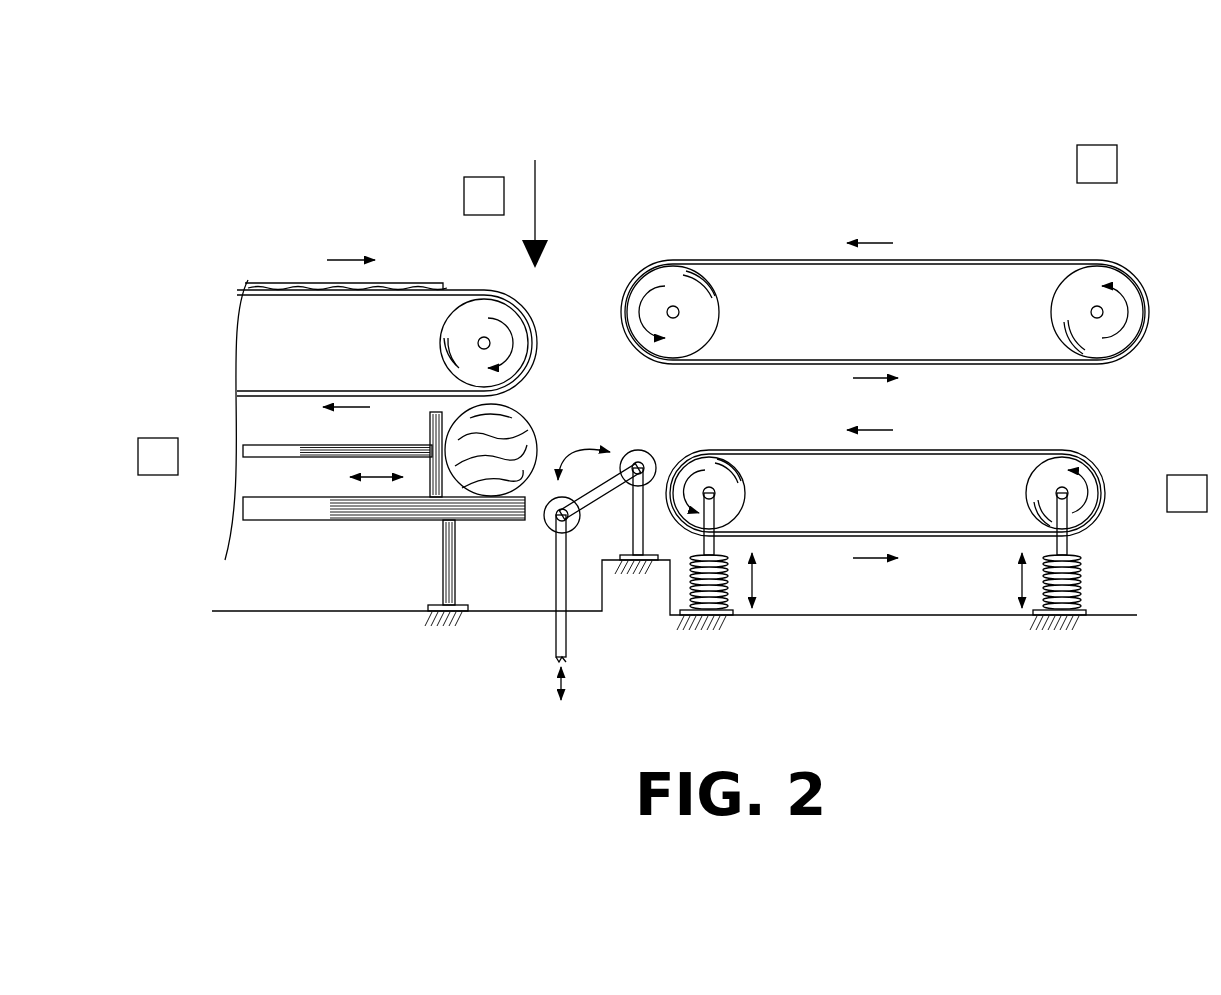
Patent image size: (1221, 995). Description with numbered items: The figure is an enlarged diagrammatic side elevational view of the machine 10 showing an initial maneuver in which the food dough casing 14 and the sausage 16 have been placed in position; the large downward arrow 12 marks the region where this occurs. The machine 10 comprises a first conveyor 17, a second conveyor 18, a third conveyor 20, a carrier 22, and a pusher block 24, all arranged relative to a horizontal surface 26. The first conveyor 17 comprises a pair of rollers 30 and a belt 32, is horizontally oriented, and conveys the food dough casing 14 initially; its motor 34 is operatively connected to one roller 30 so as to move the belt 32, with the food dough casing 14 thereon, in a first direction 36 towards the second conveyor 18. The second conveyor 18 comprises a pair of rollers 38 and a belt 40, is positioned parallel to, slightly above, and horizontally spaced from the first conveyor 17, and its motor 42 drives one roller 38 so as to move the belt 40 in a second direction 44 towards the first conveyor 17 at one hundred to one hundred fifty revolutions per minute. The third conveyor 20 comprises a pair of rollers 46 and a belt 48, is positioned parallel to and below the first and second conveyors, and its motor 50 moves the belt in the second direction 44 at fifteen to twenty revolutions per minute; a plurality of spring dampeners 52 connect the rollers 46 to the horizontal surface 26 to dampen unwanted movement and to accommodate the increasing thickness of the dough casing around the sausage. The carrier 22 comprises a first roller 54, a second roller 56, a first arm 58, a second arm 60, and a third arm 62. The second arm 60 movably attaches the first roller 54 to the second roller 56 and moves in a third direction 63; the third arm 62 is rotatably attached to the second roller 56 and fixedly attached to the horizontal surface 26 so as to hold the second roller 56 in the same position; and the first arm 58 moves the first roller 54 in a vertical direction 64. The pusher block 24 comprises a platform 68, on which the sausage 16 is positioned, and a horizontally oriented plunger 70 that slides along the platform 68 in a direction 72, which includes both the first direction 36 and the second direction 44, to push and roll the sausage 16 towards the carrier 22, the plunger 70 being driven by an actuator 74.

The machine 10 is at (597, 125).
The feed direction arrow 12 is at (535, 196).
The food dough casing 14 is at (270, 280).
The sausage 16 is at (508, 427).
The first conveyor 17 is at (462, 291).
The second conveyor 18 is at (885, 245).
The third conveyor 20 is at (936, 500).
The carrier 22 is at (587, 571).
The pusher block 24 is at (331, 499).
The horizontal surface 26 is at (249, 646).
The rollers 30 is at (434, 327).
The belt 32 is at (262, 399).
The motor 34 is at (484, 343).
The first direction 36 is at (350, 260).
The rollers 38 is at (1050, 298).
The belt 40 is at (1073, 256).
The motor 42 is at (1097, 312).
The second direction 44 is at (877, 243).
The rollers 46 is at (1022, 478).
The belt 48 is at (1033, 449).
The motor 50 is at (1105, 493).
The spring dampeners 52 is at (730, 584).
The first roller 54 is at (547, 532).
The second roller 56 is at (647, 437).
The first arm 58 is at (552, 634).
The second arm 60 is at (606, 508).
The third arm 62 is at (647, 494).
The third direction 63 is at (568, 447).
The vertical direction 64 is at (557, 686).
The platform 68 is at (364, 521).
The plunger 70 is at (267, 442).
The direction 72 is at (363, 476).
The actuator 74 is at (243, 452).